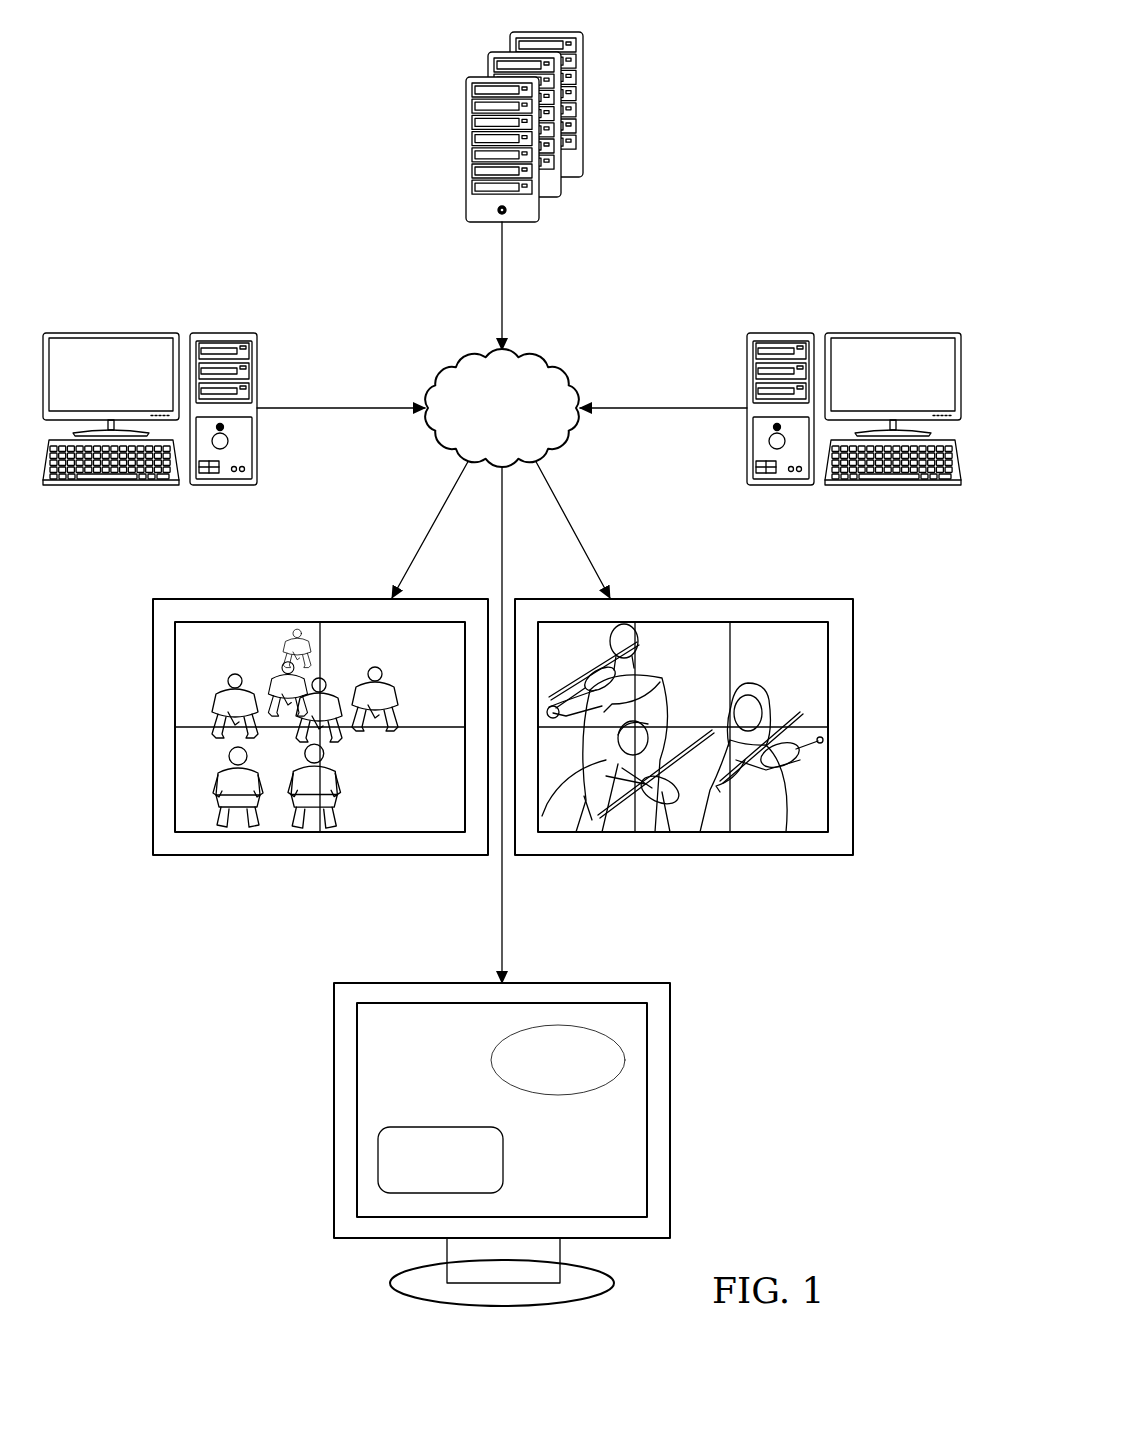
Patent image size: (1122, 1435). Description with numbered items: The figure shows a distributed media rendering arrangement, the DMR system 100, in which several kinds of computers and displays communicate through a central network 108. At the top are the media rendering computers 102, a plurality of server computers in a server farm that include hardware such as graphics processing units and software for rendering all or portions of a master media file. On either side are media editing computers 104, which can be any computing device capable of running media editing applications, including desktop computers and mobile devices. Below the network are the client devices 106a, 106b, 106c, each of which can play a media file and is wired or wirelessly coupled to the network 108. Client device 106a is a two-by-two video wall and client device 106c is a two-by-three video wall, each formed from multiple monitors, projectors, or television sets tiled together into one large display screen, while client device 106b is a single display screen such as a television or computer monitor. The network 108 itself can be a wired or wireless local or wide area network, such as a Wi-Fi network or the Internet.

The DMR system 100 is at (236, 66).
The media rendering computers 102 is at (583, 107).
The media editing computers 104 is at (222, 333).
The client device 106a is at (318, 598).
The client device 106b is at (333, 1110).
The client device 106c is at (683, 598).
The network 108 is at (468, 358).